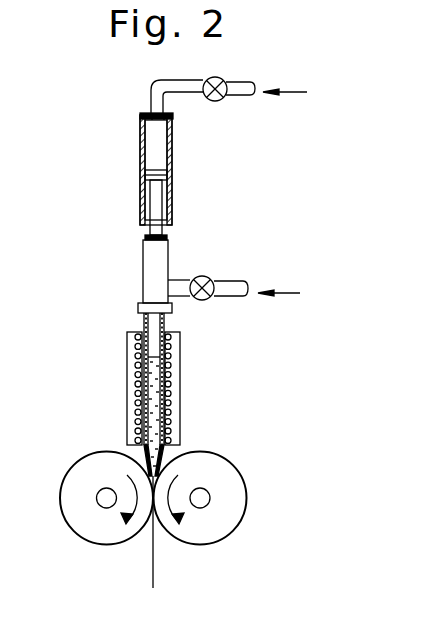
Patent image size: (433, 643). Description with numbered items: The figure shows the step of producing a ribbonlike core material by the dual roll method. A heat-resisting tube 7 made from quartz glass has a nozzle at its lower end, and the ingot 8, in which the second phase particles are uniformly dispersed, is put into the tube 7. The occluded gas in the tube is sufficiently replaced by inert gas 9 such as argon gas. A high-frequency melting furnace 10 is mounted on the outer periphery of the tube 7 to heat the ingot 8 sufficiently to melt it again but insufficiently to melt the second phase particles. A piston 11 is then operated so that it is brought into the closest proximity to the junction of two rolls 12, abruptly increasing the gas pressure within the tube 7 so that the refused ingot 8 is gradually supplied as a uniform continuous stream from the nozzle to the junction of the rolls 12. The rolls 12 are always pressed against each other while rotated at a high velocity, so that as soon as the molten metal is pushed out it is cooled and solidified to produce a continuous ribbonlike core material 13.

The heat-resisting tube 7 is at (167, 388).
The ingot 8 is at (150, 375).
The inert gas 9 is at (288, 293).
The high-frequency melting furnace 10 is at (127, 412).
The piston 11 is at (173, 168).
The rolls 12 is at (62, 513).
The ribbonlike core material 13 is at (155, 572).